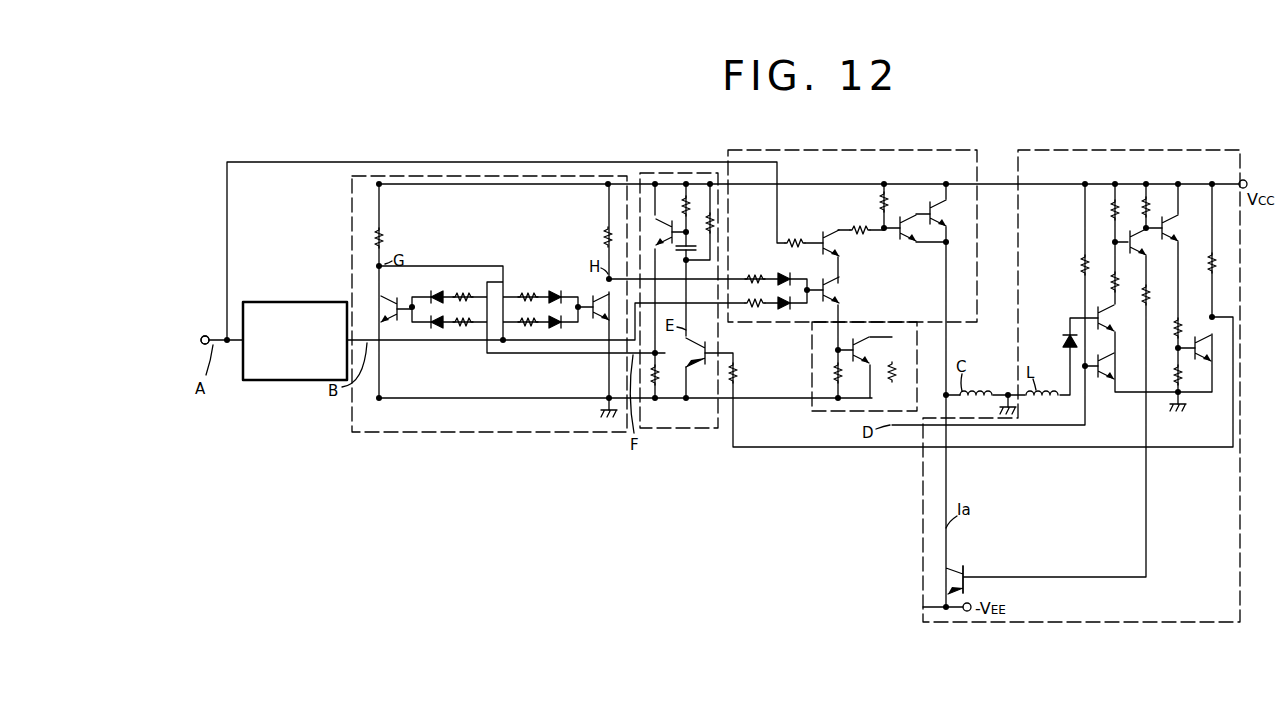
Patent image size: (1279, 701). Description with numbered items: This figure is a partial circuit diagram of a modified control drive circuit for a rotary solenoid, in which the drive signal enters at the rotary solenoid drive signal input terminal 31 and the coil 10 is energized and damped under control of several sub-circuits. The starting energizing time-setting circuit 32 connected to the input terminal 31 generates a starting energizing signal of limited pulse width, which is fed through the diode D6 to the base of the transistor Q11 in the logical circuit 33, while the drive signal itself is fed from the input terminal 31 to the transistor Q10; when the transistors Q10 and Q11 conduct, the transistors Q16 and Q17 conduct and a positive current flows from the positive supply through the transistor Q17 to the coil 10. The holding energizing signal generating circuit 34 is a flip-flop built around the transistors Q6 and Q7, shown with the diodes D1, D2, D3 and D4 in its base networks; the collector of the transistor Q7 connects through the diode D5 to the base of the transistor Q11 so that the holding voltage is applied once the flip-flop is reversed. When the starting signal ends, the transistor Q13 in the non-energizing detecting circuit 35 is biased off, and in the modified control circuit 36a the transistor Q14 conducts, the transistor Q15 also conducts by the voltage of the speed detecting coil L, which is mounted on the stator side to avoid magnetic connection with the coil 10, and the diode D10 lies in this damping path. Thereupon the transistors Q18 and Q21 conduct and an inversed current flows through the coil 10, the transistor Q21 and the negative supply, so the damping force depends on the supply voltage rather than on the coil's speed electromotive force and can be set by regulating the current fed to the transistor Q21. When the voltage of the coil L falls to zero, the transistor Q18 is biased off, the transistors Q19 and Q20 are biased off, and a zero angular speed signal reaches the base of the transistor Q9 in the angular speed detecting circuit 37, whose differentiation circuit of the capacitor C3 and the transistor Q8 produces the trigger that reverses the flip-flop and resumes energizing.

The coil 10 is at (993, 388).
The rotary solenoid drive signal input terminal 31 is at (206, 336).
The starting energizing time-setting circuit 32 is at (313, 302).
The logical circuit 33 is at (866, 150).
The holding energizing signal generating circuit 34 is at (487, 176).
The non-energizing detecting circuit 35 is at (837, 413).
The modified control circuit 36a is at (1110, 142).
The angular speed detecting circuit 37 is at (668, 173).
The speed detecting coil L is at (1042, 393).
The transistor Q6 is at (377, 309).
The transistor Q7 is at (602, 303).
The transistor Q8 is at (656, 233).
The transistor Q9 is at (699, 347).
The transistor Q10 is at (836, 248).
The transistor Q11 is at (836, 294).
The transistor Q13 is at (859, 343).
The transistor Q14 is at (1120, 366).
The transistor Q15 is at (1122, 318).
The transistor Q16 is at (911, 216).
The transistor Q17 is at (953, 216).
The transistor Q18 is at (1142, 248).
The transistor Q19 is at (1185, 228).
The transistor Q20 is at (1205, 341).
The transistor Q21 is at (951, 577).
The diode D1 is at (437, 292).
The diode D2 is at (437, 328).
The diode D3 is at (553, 289).
The diode D4 is at (550, 330).
The diode D5 is at (780, 273).
The diode D6 is at (780, 309).
The diode D10 is at (1051, 342).
The capacitor C3 is at (678, 261).